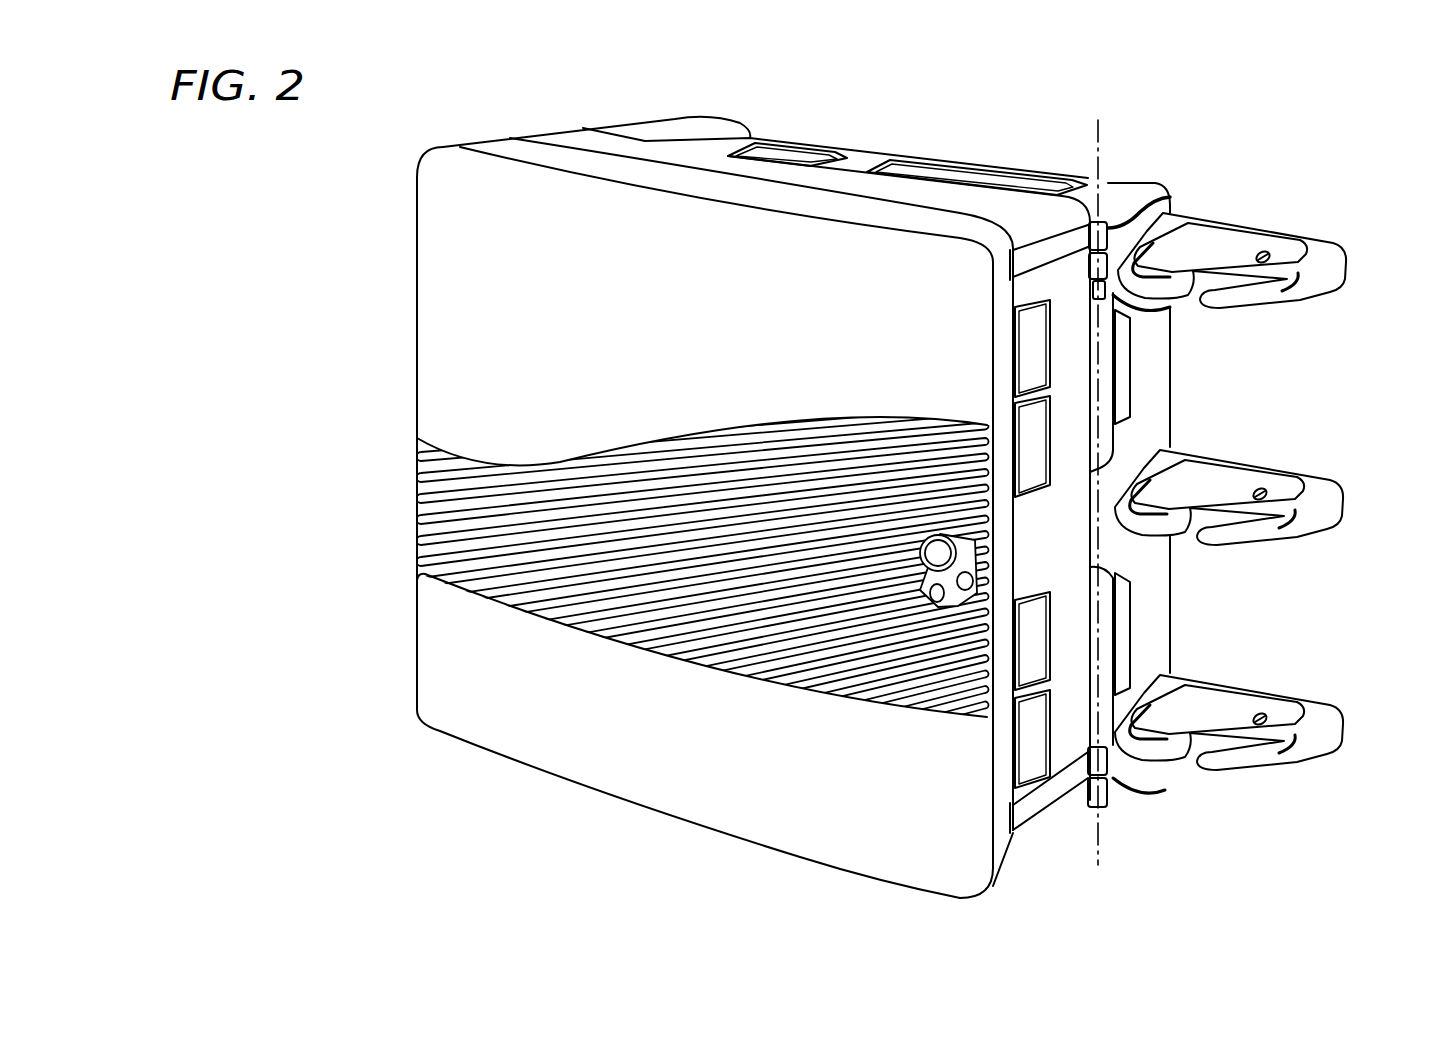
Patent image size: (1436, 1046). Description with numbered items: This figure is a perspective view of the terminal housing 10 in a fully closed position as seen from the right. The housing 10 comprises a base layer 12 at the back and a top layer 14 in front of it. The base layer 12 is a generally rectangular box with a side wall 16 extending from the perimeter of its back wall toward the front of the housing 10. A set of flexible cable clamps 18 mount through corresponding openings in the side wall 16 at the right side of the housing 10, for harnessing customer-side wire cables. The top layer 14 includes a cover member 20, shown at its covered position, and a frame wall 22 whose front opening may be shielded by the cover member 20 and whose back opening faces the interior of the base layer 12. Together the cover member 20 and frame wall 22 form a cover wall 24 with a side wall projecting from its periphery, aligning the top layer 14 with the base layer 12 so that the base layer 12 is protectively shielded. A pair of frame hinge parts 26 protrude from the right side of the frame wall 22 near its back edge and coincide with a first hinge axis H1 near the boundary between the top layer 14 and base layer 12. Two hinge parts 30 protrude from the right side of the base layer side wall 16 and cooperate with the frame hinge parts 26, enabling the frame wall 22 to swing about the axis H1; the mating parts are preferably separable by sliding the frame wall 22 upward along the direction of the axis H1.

The housing 10 is at (396, 170).
The base layer 12 is at (1142, 196).
The top layer 14 is at (1033, 834).
The side wall 16 is at (866, 152).
The flexible cable clamps 18 is at (1343, 262).
The cover member 20 is at (440, 364).
The frame wall 22 is at (1067, 833).
The cover wall 24 is at (716, 808).
The frame hinge parts 26 is at (1172, 200).
The base layer hinge parts 30 is at (1172, 308).
The first hinge axis H1 is at (1099, 134).